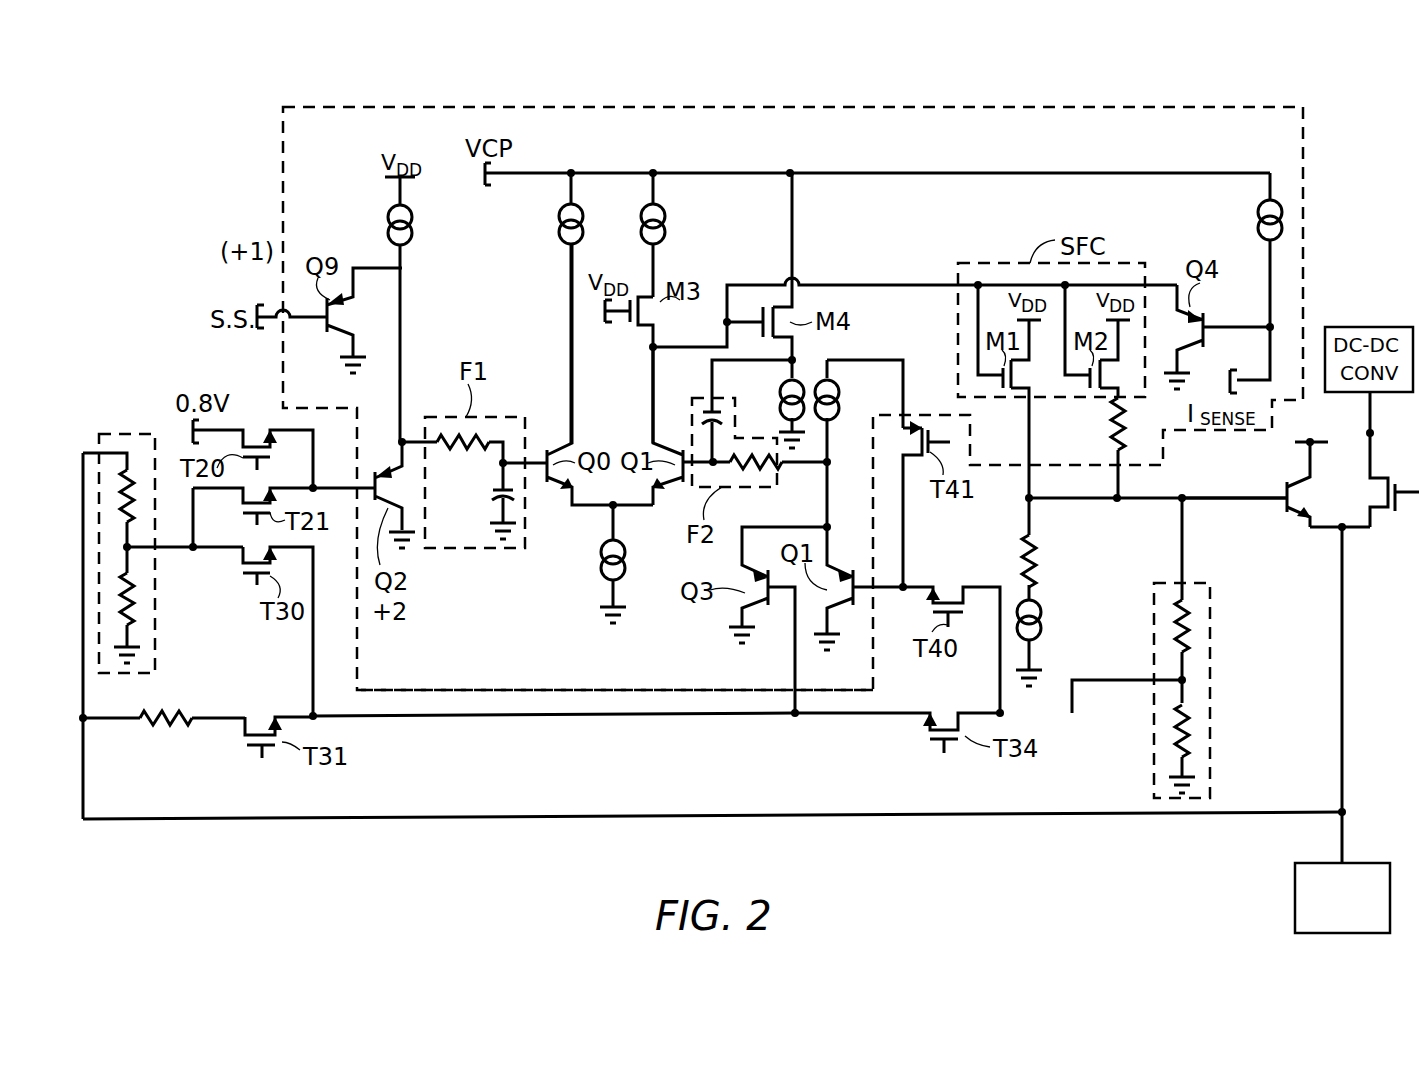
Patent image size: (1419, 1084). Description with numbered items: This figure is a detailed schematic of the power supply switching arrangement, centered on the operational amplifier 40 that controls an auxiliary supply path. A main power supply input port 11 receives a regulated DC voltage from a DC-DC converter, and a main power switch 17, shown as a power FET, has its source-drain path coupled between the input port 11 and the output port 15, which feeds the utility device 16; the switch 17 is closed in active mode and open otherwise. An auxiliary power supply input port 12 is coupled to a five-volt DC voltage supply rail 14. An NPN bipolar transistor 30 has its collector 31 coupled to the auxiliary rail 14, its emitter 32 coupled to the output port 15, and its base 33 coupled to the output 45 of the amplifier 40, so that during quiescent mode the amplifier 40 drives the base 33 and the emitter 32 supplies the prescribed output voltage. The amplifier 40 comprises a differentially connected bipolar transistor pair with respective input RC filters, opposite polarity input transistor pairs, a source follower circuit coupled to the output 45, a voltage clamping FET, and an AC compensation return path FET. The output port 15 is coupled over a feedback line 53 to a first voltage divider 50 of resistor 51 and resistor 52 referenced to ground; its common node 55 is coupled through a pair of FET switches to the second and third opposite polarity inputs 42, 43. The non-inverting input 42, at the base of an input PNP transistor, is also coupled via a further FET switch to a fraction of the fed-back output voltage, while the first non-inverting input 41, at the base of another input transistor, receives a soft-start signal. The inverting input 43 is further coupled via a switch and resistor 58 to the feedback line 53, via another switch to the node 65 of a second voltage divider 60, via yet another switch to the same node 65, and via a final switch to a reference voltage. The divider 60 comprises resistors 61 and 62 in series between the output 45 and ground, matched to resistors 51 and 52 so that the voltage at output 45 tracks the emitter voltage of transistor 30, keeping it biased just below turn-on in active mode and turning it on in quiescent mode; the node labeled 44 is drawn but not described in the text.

The main power supply input port 11 is at (1373, 433).
The auxiliary power supply input port 12 is at (1313, 445).
The DC voltage supply rail 14 is at (1308, 443).
The output port 15 is at (1340, 530).
The utility device 16 is at (1315, 863).
The main power switch 17 is at (1400, 508).
The NPN bipolar transistor 30 is at (1273, 493).
The collector 31 is at (1305, 490).
The emitter 32 is at (1305, 520).
The base 33 is at (1270, 497).
The operational amplifier 40 is at (797, 107).
The first non-inverting input 41 is at (300, 316).
The second non-inverting input 42 is at (358, 488).
The third inverting input 43 is at (793, 688).
The amplifier output node 44 is at (873, 586).
The amplifier output 45 is at (1180, 500).
The first voltage divider 50 is at (163, 599).
The resistor 51 is at (130, 496).
The resistor 52 is at (140, 598).
The feedback line 53 is at (715, 818).
The common node 55 is at (133, 550).
The resistor 58 is at (165, 712).
The voltage divider 60 is at (1176, 690).
The resistor 61 is at (1168, 645).
The resistor 62 is at (1170, 748).
The node 65 is at (1187, 683).